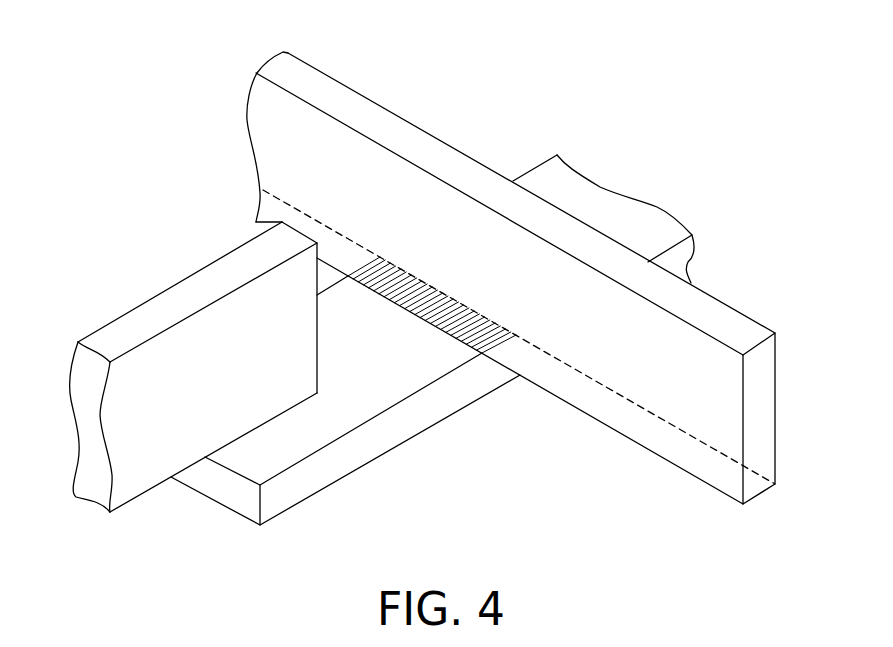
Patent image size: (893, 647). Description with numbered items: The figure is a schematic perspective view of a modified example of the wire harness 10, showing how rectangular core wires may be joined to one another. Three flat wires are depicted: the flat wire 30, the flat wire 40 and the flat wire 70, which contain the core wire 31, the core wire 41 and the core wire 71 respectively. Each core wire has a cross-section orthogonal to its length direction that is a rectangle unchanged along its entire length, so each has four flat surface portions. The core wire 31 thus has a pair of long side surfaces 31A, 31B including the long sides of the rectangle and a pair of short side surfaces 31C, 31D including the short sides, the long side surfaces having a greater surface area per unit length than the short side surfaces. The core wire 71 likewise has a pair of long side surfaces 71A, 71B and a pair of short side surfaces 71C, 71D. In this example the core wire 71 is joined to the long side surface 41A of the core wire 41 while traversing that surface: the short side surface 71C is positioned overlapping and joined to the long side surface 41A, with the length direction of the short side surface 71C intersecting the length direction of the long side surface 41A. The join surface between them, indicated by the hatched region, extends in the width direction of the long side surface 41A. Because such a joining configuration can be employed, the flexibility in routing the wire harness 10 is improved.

The wire harness 10 is at (655, 56).
The flat wire 30 is at (86, 333).
The core wire 31 is at (169, 389).
The long side surface 31A is at (110, 430).
The long side surface 31B is at (142, 304).
The short side surface 31C is at (155, 488).
The short side surface 31D is at (207, 285).
The flat wire 40 is at (539, 162).
The core wire 41 is at (432, 340).
The long side surface 41A is at (363, 408).
The flat wire 70 is at (315, 66).
The core wire 71 is at (478, 273).
The long side surface 71A is at (270, 128).
The long side surface 71B is at (382, 108).
The short side surface 71C is at (583, 413).
The short side surface 71D is at (442, 160).